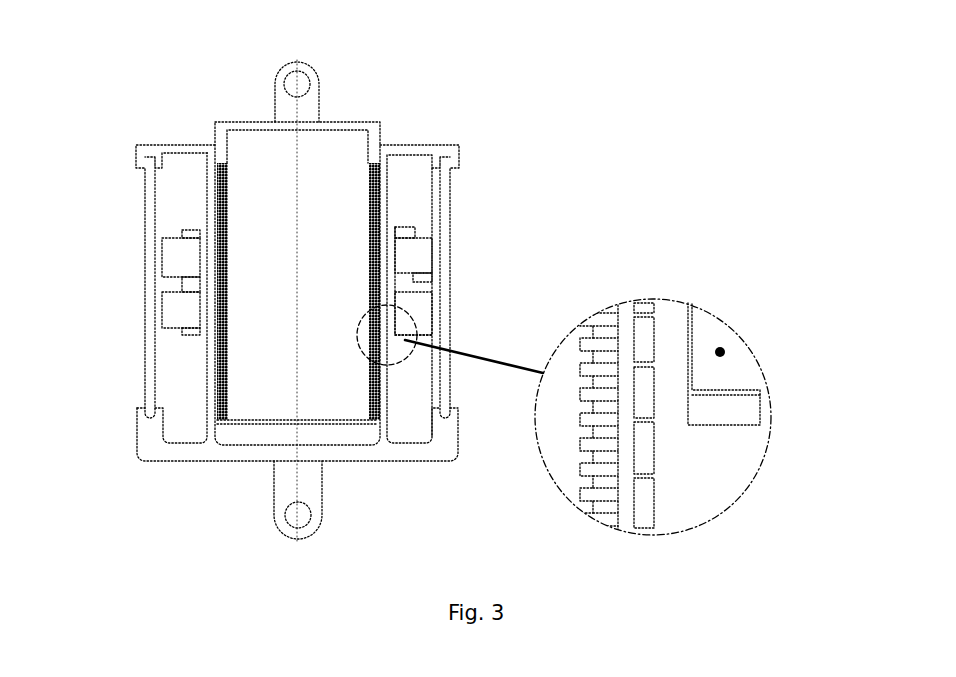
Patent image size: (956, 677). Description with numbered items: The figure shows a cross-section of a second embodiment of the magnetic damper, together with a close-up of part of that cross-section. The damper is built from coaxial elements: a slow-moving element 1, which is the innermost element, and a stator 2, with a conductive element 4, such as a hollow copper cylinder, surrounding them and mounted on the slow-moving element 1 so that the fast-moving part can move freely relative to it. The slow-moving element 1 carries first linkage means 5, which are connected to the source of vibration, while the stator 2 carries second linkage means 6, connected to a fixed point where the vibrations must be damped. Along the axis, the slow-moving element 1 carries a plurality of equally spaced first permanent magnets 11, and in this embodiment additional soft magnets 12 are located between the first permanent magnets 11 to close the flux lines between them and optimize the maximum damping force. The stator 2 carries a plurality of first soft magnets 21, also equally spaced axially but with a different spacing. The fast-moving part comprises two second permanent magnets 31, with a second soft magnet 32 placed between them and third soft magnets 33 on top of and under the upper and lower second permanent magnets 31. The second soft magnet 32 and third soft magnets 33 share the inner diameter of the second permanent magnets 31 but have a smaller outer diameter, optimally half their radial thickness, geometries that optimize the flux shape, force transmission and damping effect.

The slow-moving element 1 is at (237, 118).
The stator 2 is at (232, 460).
The conductive element 4 is at (143, 275).
The first linkage means 5 is at (324, 79).
The second linkage means 6 is at (327, 532).
The first permanent magnets 11 is at (383, 163).
The soft magnets 12 is at (391, 277).
The first soft magnets 21 is at (448, 157).
The second permanent magnets 31 is at (443, 237).
The second soft magnet 32 is at (430, 280).
The third soft magnets 33 is at (412, 228).